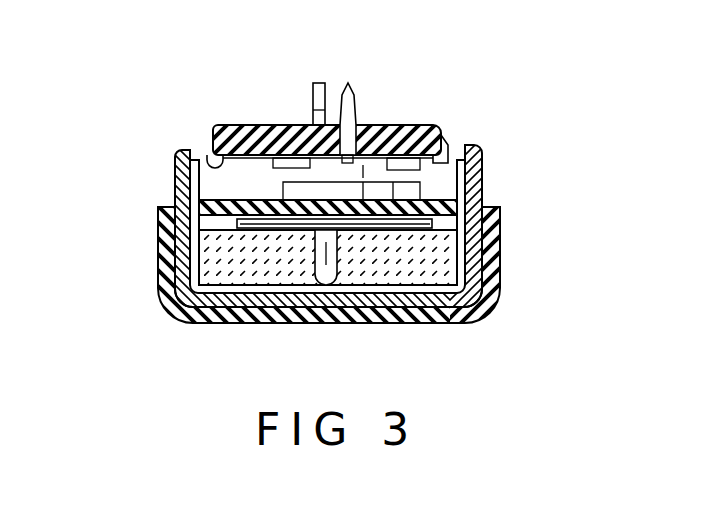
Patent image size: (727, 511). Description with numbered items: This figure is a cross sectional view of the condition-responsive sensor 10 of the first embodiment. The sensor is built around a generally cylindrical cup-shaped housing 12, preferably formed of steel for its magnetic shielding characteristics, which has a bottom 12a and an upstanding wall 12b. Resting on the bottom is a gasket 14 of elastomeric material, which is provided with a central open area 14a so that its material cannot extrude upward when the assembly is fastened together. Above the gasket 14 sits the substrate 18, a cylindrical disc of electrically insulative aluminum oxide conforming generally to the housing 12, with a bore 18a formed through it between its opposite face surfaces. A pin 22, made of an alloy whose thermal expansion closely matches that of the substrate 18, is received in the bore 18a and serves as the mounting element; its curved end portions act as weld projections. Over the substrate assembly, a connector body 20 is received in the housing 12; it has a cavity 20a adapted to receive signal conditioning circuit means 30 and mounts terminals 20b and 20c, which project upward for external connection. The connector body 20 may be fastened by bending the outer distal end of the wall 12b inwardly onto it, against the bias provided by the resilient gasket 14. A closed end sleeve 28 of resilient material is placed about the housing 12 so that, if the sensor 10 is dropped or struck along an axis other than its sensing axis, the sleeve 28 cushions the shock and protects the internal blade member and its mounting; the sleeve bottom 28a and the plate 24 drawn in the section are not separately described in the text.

The condition-responsive sensor 10 is at (120, 185).
The housing 12 is at (463, 143).
The bottom 12a is at (462, 305).
The upstanding wall 12b is at (495, 223).
The gasket 14 is at (225, 305).
The central open area 14a is at (295, 300).
The substrate 18 is at (464, 264).
The bore 18a is at (350, 305).
The connector body 20 is at (436, 113).
The cavity 20a is at (220, 153).
The terminal 20b is at (355, 95).
The terminal 20c is at (313, 103).
The pin 22 is at (322, 290).
The plate 24 is at (275, 204).
The closed end sleeve 28 is at (148, 292).
The bottom of outer casing 28a is at (408, 312).
The signal conditioning circuit means 30 is at (368, 168).